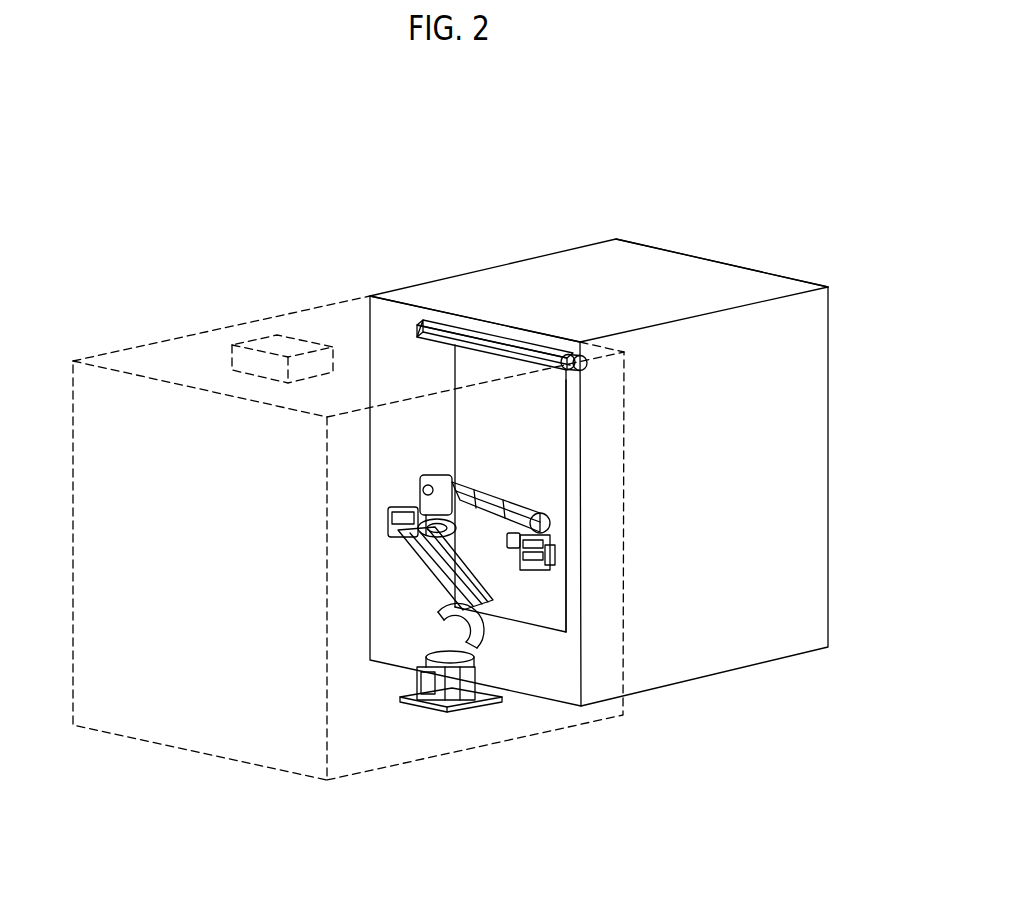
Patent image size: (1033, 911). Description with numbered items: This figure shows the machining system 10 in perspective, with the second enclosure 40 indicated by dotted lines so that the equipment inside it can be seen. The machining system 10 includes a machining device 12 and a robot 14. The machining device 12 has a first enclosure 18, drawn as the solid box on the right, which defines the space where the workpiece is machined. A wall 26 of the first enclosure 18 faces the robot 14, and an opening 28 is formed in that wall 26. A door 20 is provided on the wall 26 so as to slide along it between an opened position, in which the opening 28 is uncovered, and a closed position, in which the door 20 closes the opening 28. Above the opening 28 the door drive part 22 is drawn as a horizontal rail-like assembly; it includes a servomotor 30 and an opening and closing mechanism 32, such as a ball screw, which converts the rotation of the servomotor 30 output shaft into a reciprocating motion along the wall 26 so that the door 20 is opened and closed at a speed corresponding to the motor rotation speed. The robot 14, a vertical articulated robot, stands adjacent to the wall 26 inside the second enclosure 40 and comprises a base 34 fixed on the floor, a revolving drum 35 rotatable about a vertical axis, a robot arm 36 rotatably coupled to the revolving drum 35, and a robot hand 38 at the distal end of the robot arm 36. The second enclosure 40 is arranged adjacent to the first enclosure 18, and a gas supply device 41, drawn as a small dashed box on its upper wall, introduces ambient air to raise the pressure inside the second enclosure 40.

The machining system 10 is at (682, 85).
The machining device 12 is at (722, 181).
The robot 14 is at (476, 593).
The first enclosure 18 is at (634, 277).
The door 20 is at (480, 365).
The door drive part 22 is at (502, 274).
The wall 26 is at (396, 330).
The opening 28 is at (556, 434).
The servomotor 30 is at (568, 355).
The opening and closing mechanism 32 is at (528, 352).
The base 34 is at (478, 673).
The revolving drum 35 is at (432, 605).
The robot arm 36 is at (420, 578).
The robot hand 38 is at (565, 565).
The second enclosure 40 is at (168, 340).
The gas supply device 41 is at (270, 340).